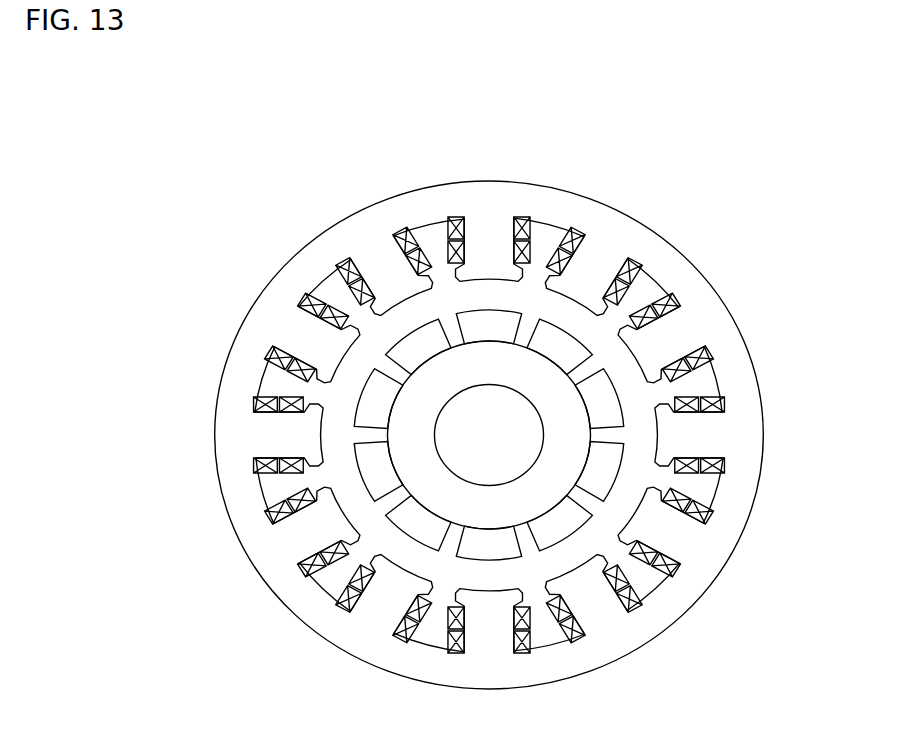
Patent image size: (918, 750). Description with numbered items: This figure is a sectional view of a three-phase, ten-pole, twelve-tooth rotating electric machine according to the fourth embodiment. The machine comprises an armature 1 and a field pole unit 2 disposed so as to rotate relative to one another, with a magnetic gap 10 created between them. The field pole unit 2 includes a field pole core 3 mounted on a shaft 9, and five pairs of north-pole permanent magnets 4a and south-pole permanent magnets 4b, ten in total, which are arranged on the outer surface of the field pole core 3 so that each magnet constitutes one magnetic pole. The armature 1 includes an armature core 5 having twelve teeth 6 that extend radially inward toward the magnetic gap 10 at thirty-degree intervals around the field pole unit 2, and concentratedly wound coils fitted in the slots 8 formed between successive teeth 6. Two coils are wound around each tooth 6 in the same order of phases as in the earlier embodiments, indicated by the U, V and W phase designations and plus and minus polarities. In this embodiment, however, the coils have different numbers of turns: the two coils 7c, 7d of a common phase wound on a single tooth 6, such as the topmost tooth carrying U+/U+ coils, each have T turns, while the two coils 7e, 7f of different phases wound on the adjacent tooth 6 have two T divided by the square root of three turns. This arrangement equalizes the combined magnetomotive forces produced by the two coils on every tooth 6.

The armature 1 is at (275, 110).
The field pole unit 2 is at (780, 217).
The field pole core 3 is at (535, 378).
The north-pole permanent magnet 4a is at (613, 388).
The south-pole permanent magnet 4b is at (625, 455).
The armature core 5 is at (390, 210).
The tooth 6 is at (475, 242).
The coil 7c is at (522, 225).
The coil 7d is at (529, 255).
The coil 7e is at (628, 256).
The coil 7f is at (640, 318).
The slot 8 is at (313, 283).
The shaft 9 is at (462, 454).
The magnetic gap 10 is at (355, 353).